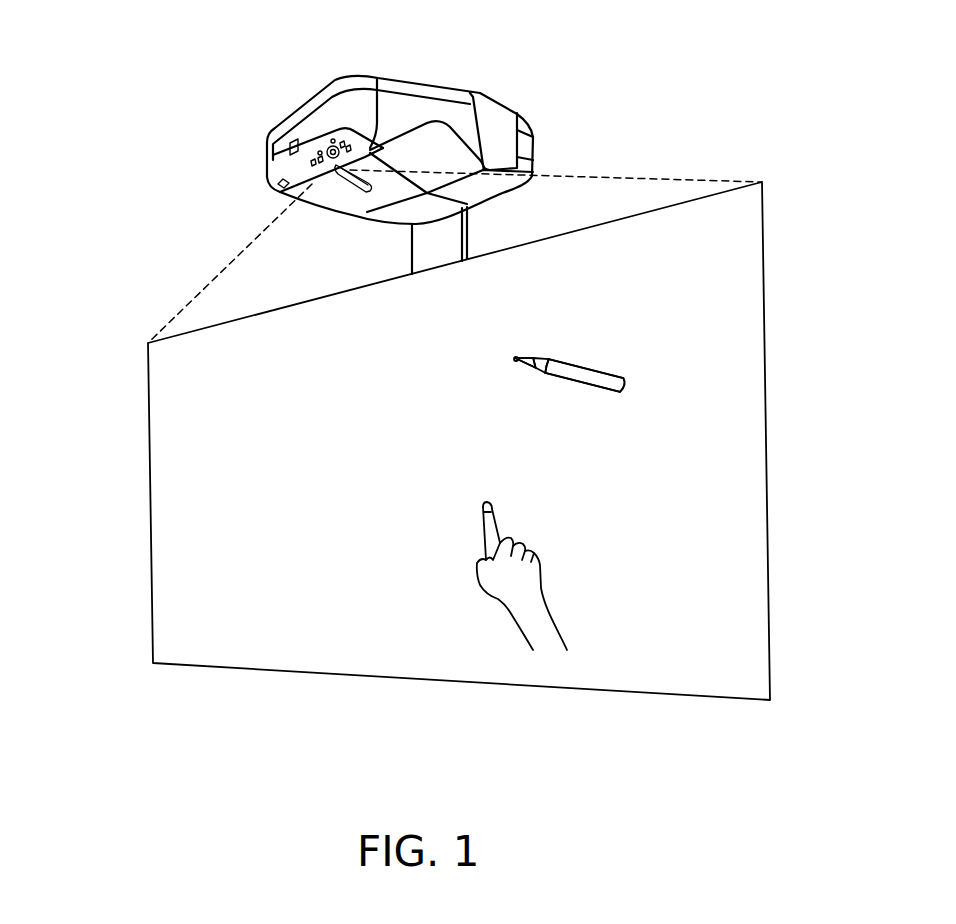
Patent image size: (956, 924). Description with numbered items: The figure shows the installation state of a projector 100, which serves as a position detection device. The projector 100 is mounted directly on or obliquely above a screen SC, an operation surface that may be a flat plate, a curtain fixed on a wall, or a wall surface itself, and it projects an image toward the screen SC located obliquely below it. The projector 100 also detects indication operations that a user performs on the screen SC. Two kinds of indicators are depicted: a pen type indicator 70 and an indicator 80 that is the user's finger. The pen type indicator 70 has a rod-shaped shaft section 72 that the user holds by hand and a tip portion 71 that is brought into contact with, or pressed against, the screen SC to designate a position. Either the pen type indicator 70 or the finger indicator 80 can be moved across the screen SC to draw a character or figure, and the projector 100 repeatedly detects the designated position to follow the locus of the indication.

The projector 100 is at (413, 80).
The screen SC is at (150, 485).
The pen type indicator 70 is at (587, 364).
The tip portion 71 is at (518, 355).
The shaft section 72 is at (597, 388).
The indicator 80 is at (487, 503).